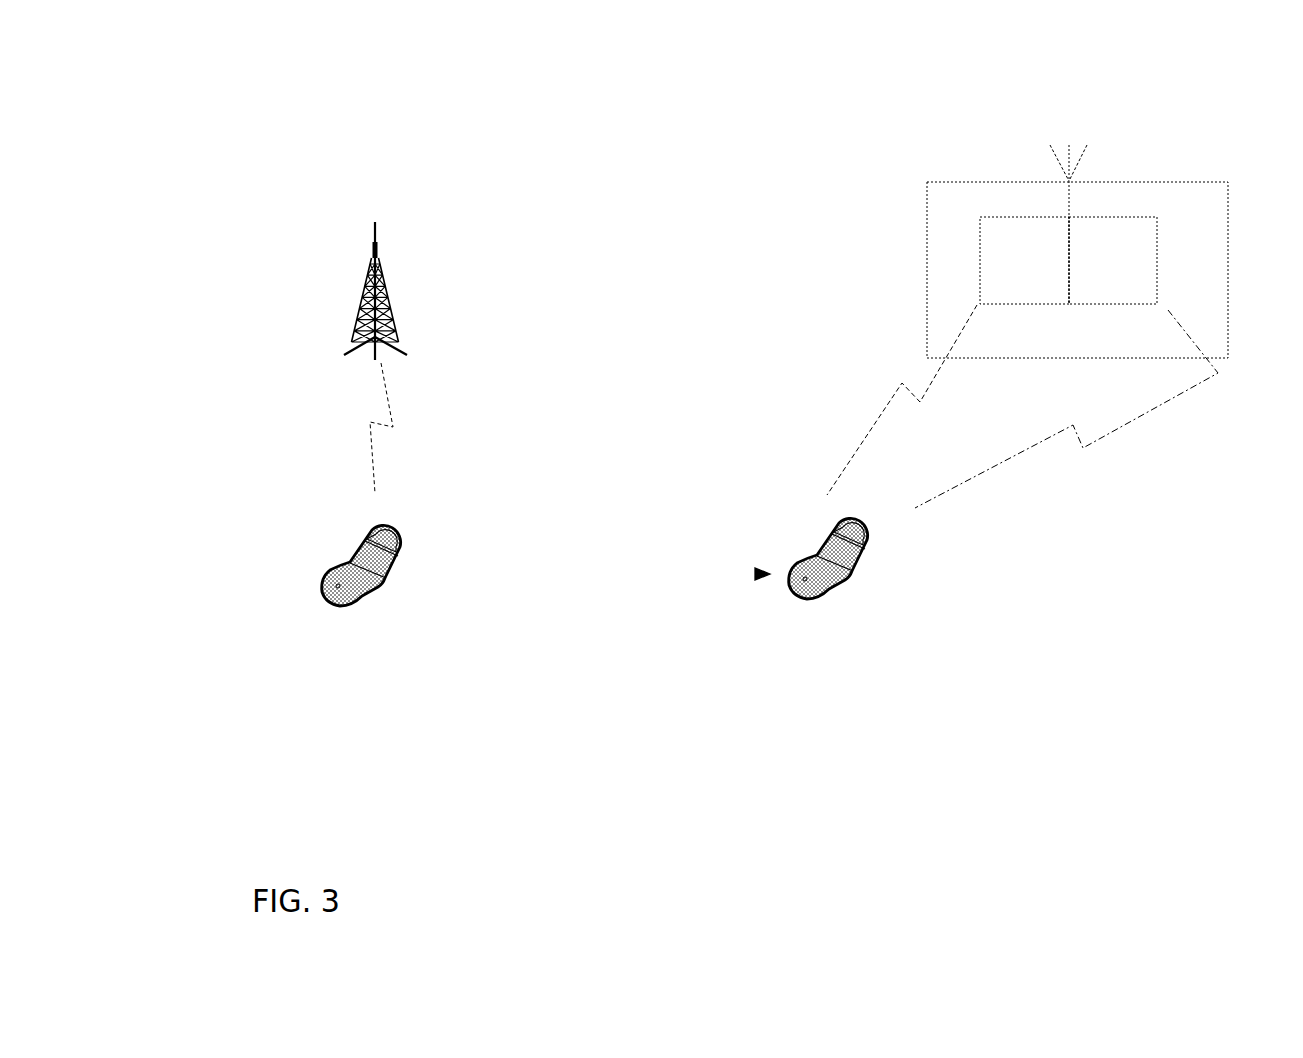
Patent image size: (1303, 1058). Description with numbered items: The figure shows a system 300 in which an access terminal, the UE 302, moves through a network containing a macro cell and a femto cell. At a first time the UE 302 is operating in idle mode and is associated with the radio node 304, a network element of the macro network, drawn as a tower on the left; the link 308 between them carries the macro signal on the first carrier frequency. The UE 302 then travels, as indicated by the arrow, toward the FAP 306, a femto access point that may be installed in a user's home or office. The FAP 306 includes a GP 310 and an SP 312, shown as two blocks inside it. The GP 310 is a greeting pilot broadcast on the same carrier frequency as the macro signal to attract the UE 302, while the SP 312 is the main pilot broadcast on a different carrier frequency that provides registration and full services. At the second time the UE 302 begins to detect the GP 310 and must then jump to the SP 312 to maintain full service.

The system 300 is at (1172, 144).
The UE 302 is at (593, 565).
The radio node 304 is at (375, 280).
The FAP 306 is at (1027, 326).
The macro communication link on frequency f1 308 is at (356, 428).
The GP 310 is at (1024, 260).
The SP 312 is at (1113, 260).